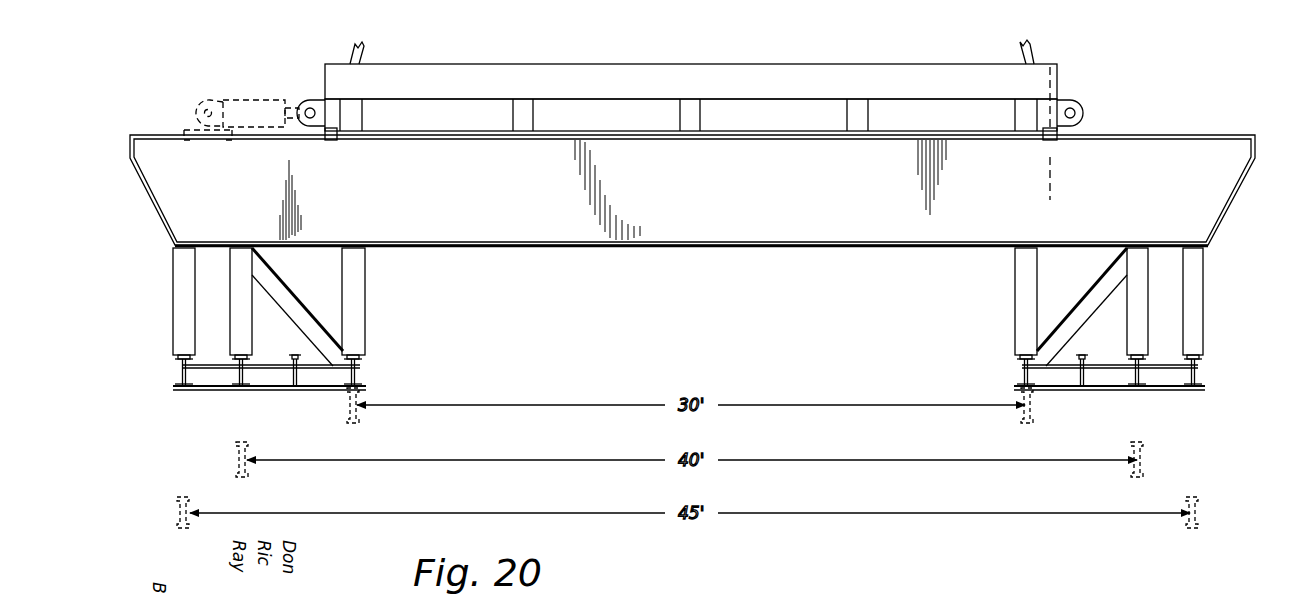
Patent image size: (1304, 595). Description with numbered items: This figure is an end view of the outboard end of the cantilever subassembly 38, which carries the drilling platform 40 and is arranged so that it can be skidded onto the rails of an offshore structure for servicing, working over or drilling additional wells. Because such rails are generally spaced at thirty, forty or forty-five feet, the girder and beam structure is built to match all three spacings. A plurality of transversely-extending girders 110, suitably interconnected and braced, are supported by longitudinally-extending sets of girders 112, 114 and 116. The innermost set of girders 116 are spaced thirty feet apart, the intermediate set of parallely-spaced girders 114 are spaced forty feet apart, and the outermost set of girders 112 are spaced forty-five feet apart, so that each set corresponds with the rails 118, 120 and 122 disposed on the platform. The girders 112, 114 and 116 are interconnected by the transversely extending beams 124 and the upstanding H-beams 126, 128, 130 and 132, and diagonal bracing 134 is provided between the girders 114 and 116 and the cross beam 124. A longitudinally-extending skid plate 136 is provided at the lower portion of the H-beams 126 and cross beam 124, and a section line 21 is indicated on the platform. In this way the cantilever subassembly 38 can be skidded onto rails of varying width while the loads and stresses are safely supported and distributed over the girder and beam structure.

The section line 21- 21 is at (1052, 90).
The cantilever subassembly 38 is at (1212, 243).
The drilling platform 40 is at (850, 78).
The transversely-extending girders 110 is at (830, 212).
The outermost set of girders 112 is at (182, 273).
The intermediate set of girders 114 is at (235, 296).
The innermost set of girders 116 is at (355, 293).
The rails 118 is at (178, 505).
The rails 120 is at (237, 452).
The rails 122 is at (363, 418).
The transversely extending beams 124 is at (335, 377).
The upstanding H-beams 126 is at (183, 376).
The upstanding H-beams 128 is at (240, 372).
The upstanding H-beams 130 is at (291, 372).
The upstanding H-beams 132 is at (360, 372).
The diagonal bracing 134 is at (272, 282).
The base beam 136 is at (326, 392).